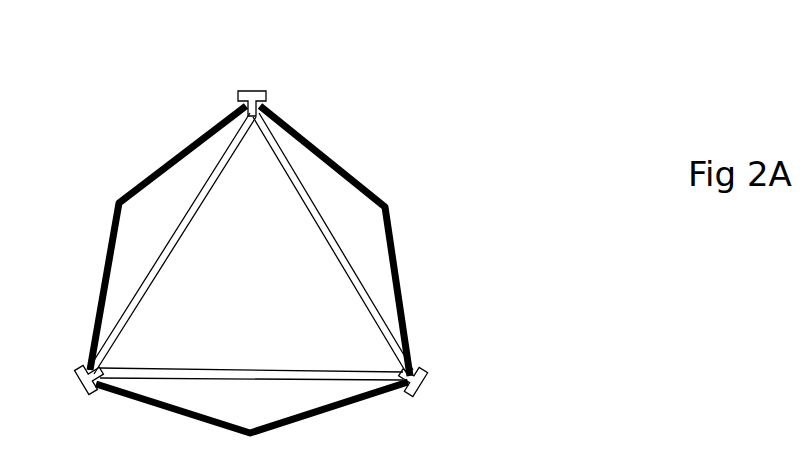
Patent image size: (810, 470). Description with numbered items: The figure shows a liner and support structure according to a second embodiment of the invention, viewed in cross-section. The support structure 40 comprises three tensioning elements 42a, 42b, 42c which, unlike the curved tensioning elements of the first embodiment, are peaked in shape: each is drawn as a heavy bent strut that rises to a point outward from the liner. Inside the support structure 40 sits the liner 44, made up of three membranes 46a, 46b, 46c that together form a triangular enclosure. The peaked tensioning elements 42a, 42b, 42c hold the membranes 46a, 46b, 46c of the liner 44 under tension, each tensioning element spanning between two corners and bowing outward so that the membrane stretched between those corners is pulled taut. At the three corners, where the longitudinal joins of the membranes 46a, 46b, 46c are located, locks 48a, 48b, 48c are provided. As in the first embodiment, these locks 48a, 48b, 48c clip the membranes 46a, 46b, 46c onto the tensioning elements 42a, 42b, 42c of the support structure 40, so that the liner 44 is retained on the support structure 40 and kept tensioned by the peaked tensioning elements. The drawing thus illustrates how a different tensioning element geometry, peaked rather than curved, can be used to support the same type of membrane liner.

The support structure 40 is at (313, 130).
The tensioning element 42a is at (400, 254).
The tensioning element 42b is at (150, 405).
The tensioning element 42c is at (111, 238).
The liner 44 is at (293, 202).
The membrane 46a is at (328, 248).
The membrane 46b is at (240, 372).
The membrane 46c is at (156, 272).
The lock 48a is at (422, 392).
The lock 48b is at (82, 389).
The lock 48c is at (254, 90).